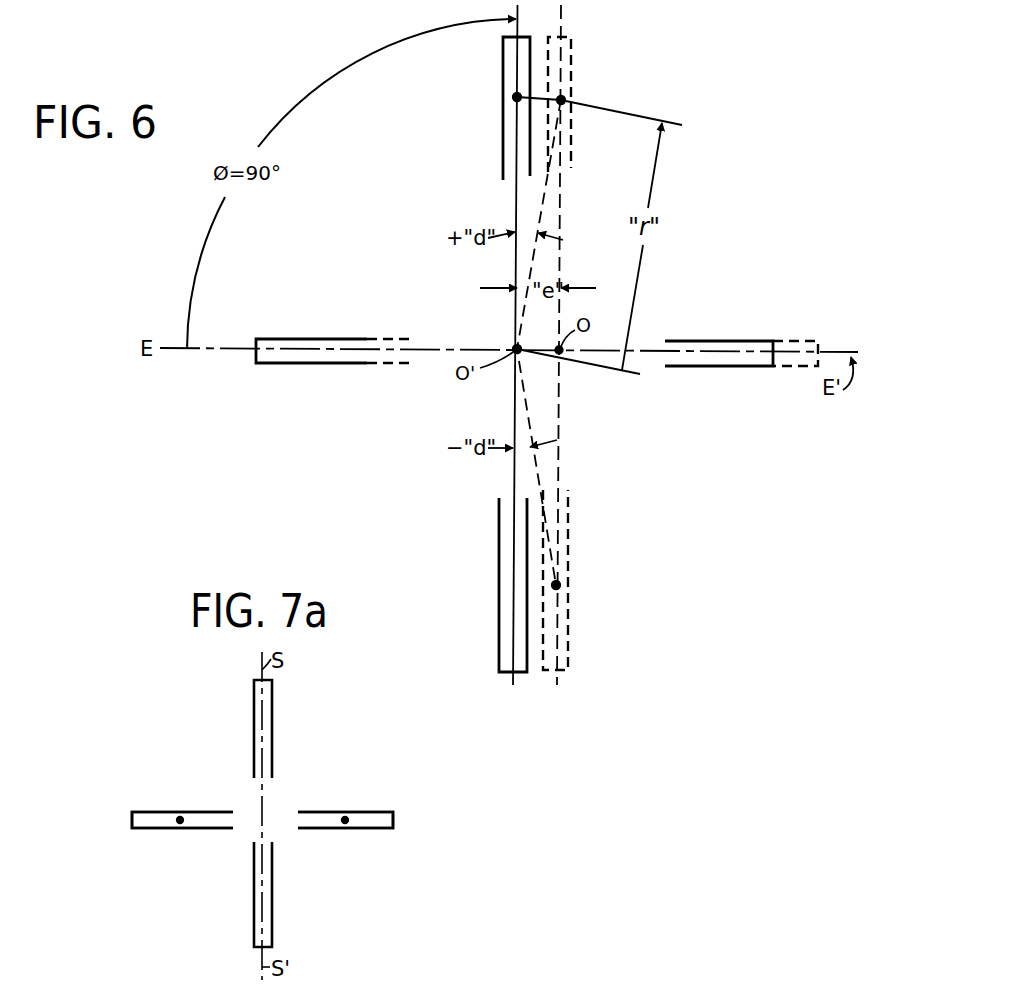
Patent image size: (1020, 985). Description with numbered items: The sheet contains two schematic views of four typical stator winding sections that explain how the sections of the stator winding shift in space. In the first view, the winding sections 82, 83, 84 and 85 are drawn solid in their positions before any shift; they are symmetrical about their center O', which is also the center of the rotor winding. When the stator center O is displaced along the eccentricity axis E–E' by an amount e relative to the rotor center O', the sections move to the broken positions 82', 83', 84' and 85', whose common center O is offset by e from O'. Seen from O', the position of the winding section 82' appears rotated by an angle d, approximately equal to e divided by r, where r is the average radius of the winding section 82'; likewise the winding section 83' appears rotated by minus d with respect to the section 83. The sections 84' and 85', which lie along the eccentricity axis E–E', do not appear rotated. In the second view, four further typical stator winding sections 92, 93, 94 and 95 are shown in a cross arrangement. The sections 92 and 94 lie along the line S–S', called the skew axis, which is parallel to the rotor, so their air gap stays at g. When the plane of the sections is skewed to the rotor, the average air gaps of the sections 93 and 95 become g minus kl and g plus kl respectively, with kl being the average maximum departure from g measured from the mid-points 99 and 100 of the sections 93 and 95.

In FIG. 6, the stator winding section 82 is at (488, 108).
In FIG. 6, the shifted winding section 82' is at (595, 104).
In FIG. 6, the stator winding section 83 is at (486, 585).
In FIG. 6, the shifted winding section 83' is at (590, 580).
In FIG. 6, the stator winding section 84 is at (311, 328).
In FIG. 6, the shifted winding section 84' is at (391, 328).
In FIG. 6, the stator winding section 85 is at (719, 333).
In FIG. 6, the shifted winding section 85' is at (802, 332).
In FIG. 7a, the stator winding section 92 is at (272, 708).
In FIG. 7a, the stator winding section 93 is at (383, 828).
In FIG. 7a, the stator winding section 94 is at (254, 895).
In FIG. 7a, the stator winding section 95 is at (140, 828).
In FIG. 7a, the mid-point of winding section 99 is at (345, 820).
In FIG. 7a, the mid-point of winding section 100 is at (200, 782).